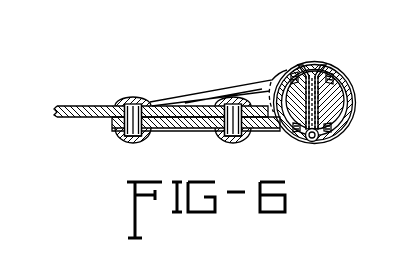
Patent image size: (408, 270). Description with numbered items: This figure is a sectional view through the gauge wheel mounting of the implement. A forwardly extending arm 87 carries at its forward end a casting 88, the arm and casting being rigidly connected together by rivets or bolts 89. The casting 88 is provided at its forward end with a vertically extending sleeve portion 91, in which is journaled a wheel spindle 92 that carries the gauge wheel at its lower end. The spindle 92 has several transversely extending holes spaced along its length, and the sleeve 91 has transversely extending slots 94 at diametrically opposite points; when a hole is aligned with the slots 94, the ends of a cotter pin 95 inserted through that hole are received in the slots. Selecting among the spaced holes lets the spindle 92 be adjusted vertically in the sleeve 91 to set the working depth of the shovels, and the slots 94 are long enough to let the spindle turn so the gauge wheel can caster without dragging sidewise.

The forwardly extending arm 87 is at (88, 106).
The casting 88 is at (181, 129).
The rivets or bolts 89 is at (222, 98).
The sleeve portion 91 is at (356, 108).
The wheel spindle 92 is at (319, 136).
The transversely extending slots 94 is at (293, 76).
The cotter pin 95 is at (312, 142).